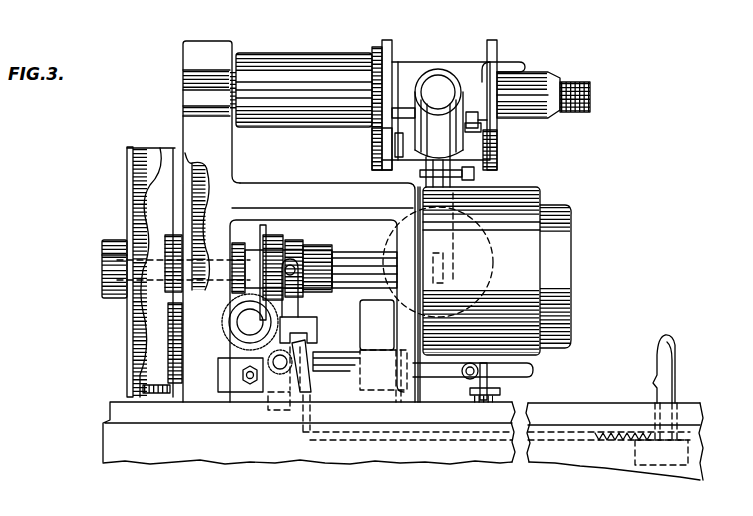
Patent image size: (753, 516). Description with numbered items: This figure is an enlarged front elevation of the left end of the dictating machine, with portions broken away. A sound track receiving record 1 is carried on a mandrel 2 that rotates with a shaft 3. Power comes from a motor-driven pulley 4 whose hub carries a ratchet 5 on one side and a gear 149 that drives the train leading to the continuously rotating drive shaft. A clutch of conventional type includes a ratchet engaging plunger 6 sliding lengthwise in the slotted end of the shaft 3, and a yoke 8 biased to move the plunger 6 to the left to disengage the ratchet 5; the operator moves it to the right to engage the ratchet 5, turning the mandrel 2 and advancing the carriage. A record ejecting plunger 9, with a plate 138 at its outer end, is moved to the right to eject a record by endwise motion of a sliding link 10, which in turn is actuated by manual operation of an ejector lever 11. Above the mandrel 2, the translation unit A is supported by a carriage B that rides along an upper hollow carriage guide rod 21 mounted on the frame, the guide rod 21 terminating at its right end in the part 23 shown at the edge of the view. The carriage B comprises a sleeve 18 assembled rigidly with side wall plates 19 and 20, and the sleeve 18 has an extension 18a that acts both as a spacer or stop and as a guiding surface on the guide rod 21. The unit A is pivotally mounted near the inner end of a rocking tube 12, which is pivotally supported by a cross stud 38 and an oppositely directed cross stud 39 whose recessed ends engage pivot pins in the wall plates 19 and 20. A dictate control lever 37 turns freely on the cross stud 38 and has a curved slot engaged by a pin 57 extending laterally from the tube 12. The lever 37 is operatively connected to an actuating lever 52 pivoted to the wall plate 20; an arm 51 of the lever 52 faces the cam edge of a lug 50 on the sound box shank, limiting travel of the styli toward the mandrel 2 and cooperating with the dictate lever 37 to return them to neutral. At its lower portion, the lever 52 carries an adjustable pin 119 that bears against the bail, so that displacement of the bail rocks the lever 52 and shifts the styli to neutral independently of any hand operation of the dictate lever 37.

The sound track receiving record 1 is at (537, 190).
The mandrel 2 is at (571, 217).
The shaft 3 is at (372, 258).
The pulley 4 is at (128, 147).
The ratchet 5 is at (120, 293).
The ratchet engaging plunger 6 is at (120, 242).
The yoke 8 is at (292, 293).
The record ejecting plunger 9 is at (338, 356).
The sliding link 10 is at (338, 438).
The ejector lever 11 is at (677, 360).
The rocking tube 12 is at (448, 72).
The sleeve 18 is at (430, 63).
The extension of sleeve 18a is at (303, 60).
The side wall plate 19 is at (380, 147).
The side wall plate 20 is at (498, 152).
The upper hollow carriage guide rod 21 is at (538, 74).
The knurled knob 23 is at (577, 82).
The dictate control lever 37 is at (508, 63).
The cross stud 38 is at (470, 133).
The cross stud 39 is at (400, 107).
The lug 50 is at (418, 183).
The arm 51 is at (453, 177).
The translation unit conditioning control lever 52 is at (487, 372).
The pin 57 is at (472, 97).
The adjustable pin 119 is at (468, 380).
The plate 138 is at (383, 345).
The gear 149 is at (172, 237).
The translation unit A is at (388, 163).
The carriage B is at (385, 40).